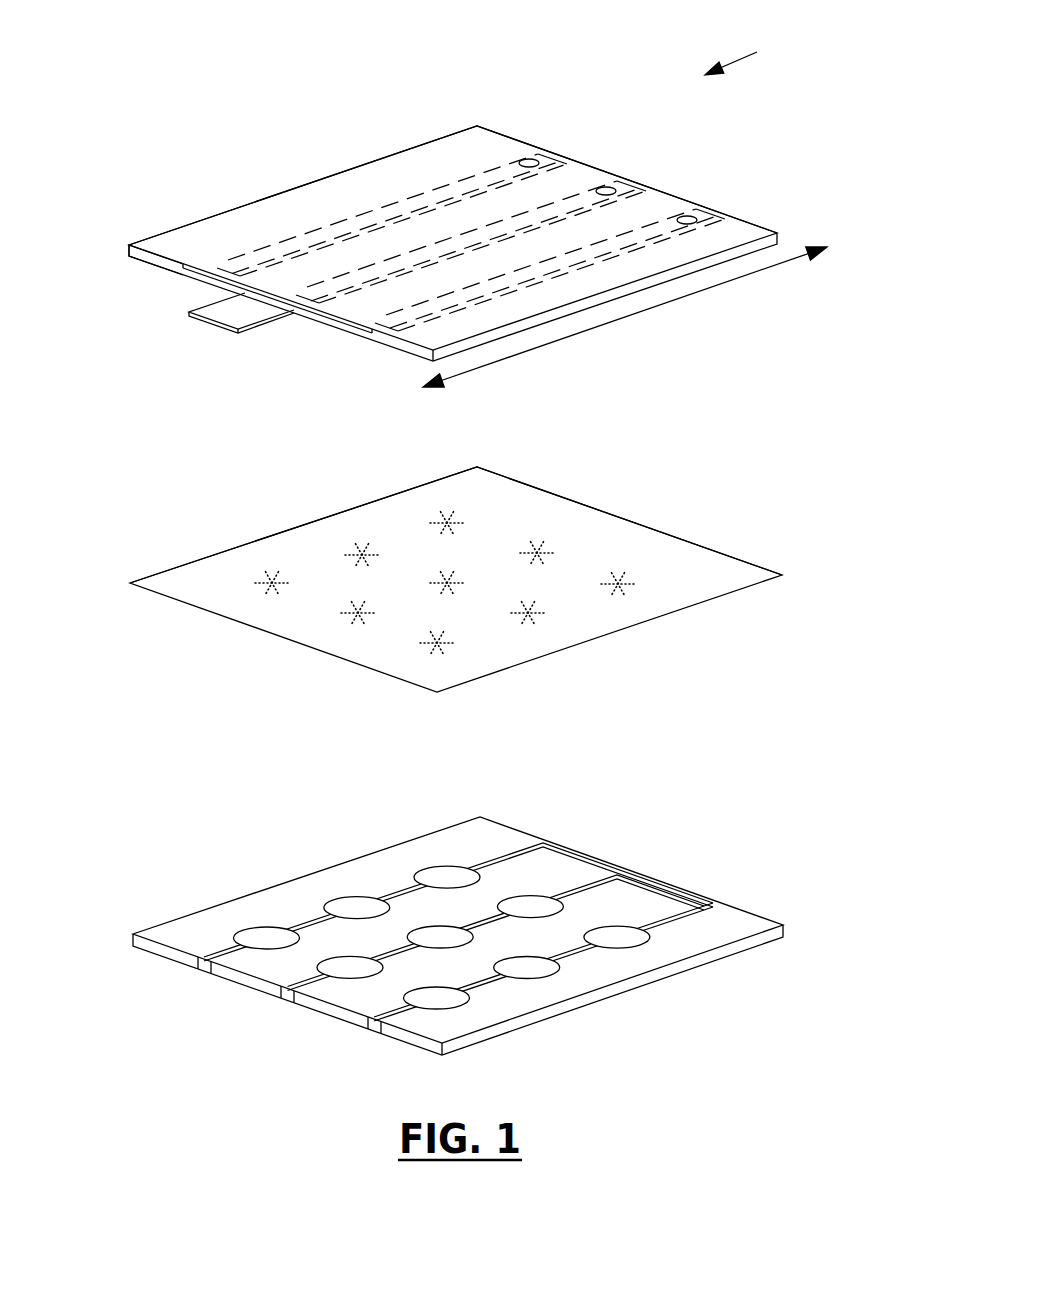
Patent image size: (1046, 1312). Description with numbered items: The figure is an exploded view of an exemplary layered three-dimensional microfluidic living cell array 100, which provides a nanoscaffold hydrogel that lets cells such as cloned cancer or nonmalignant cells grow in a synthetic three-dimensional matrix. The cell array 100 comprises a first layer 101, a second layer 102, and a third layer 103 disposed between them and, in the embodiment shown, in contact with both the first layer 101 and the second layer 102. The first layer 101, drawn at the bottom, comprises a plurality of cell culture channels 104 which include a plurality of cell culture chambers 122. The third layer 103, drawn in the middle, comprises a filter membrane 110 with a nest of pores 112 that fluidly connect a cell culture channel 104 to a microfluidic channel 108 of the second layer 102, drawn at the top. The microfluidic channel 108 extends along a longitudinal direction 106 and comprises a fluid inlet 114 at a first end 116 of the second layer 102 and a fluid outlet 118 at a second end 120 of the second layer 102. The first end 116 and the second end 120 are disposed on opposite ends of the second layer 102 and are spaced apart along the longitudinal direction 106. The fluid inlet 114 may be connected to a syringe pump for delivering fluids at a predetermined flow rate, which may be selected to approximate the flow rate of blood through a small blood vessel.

The cell array 100 is at (752, 52).
The first layer 101 is at (740, 922).
The second layer 102 is at (752, 233).
The third layer 103 is at (742, 575).
The cell culture channels 104 is at (653, 925).
The longitudinal direction 106 is at (645, 311).
The microfluidic channel 108 is at (382, 213).
The filter membrane 110 is at (512, 488).
The pores 112 is at (550, 545).
The fluid inlet 114 is at (232, 312).
The first end 116 is at (160, 234).
The fluid outlet 118 is at (635, 183).
The second end 120 is at (462, 130).
The cell culture chambers 122 is at (267, 948).